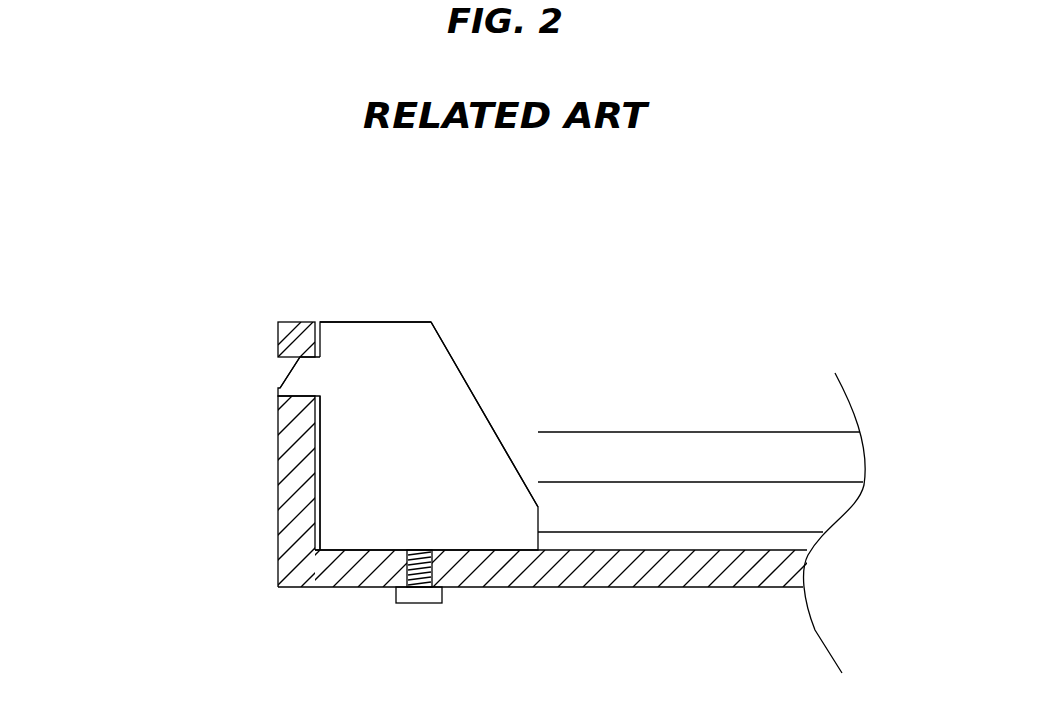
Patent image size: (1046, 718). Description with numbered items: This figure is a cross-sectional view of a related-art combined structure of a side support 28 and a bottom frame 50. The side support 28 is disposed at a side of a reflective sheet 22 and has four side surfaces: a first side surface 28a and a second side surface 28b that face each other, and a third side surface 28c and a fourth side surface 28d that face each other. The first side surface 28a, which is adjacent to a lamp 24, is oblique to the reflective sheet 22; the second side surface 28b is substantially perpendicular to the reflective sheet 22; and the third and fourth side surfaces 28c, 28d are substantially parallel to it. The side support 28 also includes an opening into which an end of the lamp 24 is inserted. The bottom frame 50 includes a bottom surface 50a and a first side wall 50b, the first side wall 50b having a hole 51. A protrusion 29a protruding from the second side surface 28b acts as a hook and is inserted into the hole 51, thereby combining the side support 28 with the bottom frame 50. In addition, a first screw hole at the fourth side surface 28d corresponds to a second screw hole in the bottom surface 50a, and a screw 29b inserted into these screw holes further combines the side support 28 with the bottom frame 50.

The reflective sheet 22 is at (787, 542).
The lamp 24 is at (727, 450).
The side support 28 is at (438, 365).
The first side surface 28a is at (473, 388).
The second side surface 28b is at (322, 447).
The third side surface 28c is at (368, 320).
The fourth side surface 28d is at (457, 548).
The protrusion 29a is at (277, 388).
The screw 29b is at (386, 588).
The bottom frame 50 is at (410, 623).
The bottom surface 50a is at (524, 576).
The first side wall 50b is at (297, 528).
The hole 51 is at (268, 368).